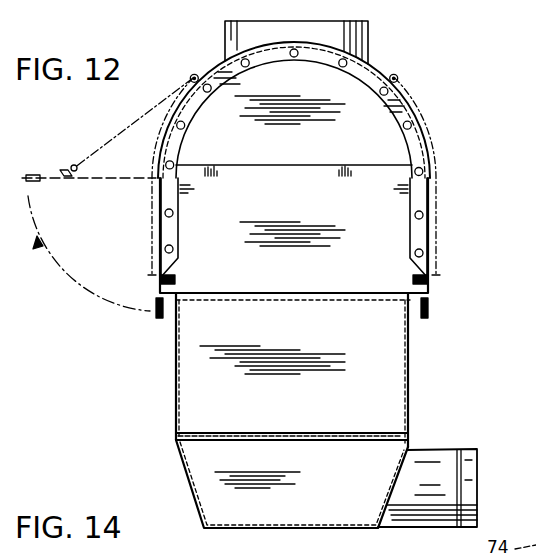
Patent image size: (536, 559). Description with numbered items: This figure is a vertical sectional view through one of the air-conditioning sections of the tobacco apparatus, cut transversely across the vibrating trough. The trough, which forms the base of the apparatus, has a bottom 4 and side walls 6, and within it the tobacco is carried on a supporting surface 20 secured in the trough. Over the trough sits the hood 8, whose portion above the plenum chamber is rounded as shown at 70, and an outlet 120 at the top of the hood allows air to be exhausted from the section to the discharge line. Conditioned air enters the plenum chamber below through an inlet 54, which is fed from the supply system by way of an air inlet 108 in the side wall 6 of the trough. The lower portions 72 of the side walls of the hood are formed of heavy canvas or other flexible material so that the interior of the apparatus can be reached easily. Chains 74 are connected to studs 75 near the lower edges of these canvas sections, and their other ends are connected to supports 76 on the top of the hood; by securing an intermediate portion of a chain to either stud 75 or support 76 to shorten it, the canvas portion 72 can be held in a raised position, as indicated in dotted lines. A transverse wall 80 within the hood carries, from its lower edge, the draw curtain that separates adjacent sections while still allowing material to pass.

The bottom 4 is at (292, 527).
The side walls 6 is at (175, 388).
The hood 8 is at (223, 62).
The supporting surface 20 is at (310, 433).
The inlet 54 is at (478, 488).
The rounded portion of hood 70 is at (370, 72).
The lower portions of hood side walls 72 is at (158, 238).
The chains 74 is at (150, 140).
The studs 75 is at (66, 168).
The supports 76 is at (398, 78).
The transverse wall 80 is at (338, 264).
The air inlets 108 is at (445, 503).
The outlets 120 is at (348, 36).